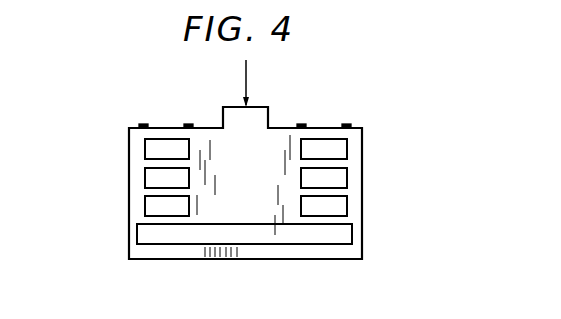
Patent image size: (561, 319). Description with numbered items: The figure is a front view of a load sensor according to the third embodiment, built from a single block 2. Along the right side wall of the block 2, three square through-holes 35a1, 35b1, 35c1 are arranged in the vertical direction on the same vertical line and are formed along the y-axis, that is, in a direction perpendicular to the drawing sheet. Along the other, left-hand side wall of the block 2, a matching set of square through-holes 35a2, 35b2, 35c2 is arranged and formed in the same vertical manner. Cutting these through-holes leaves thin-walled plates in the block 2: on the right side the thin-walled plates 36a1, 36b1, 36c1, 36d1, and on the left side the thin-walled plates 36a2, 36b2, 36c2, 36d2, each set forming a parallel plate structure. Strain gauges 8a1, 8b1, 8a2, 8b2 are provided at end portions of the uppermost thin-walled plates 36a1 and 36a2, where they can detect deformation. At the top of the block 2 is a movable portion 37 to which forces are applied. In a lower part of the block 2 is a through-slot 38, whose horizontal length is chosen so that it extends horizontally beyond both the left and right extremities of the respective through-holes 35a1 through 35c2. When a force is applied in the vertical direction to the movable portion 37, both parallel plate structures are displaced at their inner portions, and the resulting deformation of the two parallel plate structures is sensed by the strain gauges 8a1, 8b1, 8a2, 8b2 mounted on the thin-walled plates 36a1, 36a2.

The block 2 is at (183, 260).
The strain gauge 8a1 is at (347, 124).
The strain gauge 8a2 is at (143, 124).
The strain gauge 8b1 is at (302, 124).
The strain gauge 8b2 is at (189, 124).
The movable portion 37 is at (270, 125).
The through-slot 38 is at (332, 241).
The square through-hole 35a1 is at (341, 147).
The square through-hole 35b1 is at (341, 177).
The square through-hole 35c1 is at (341, 205).
The square through-hole 35a2 is at (165, 150).
The square through-hole 35b2 is at (165, 180).
The square through-hole 35c2 is at (165, 208).
The thin-walled plate 36a1 is at (333, 133).
The thin-walled plate 36b1 is at (333, 164).
The thin-walled plate 36c1 is at (333, 192).
The thin-walled plate 36d1 is at (333, 221).
The thin-walled plate 36a2 is at (172, 134).
The thin-walled plate 36b2 is at (170, 163).
The thin-walled plate 36c2 is at (170, 192).
The thin-walled plate 36d2 is at (150, 220).